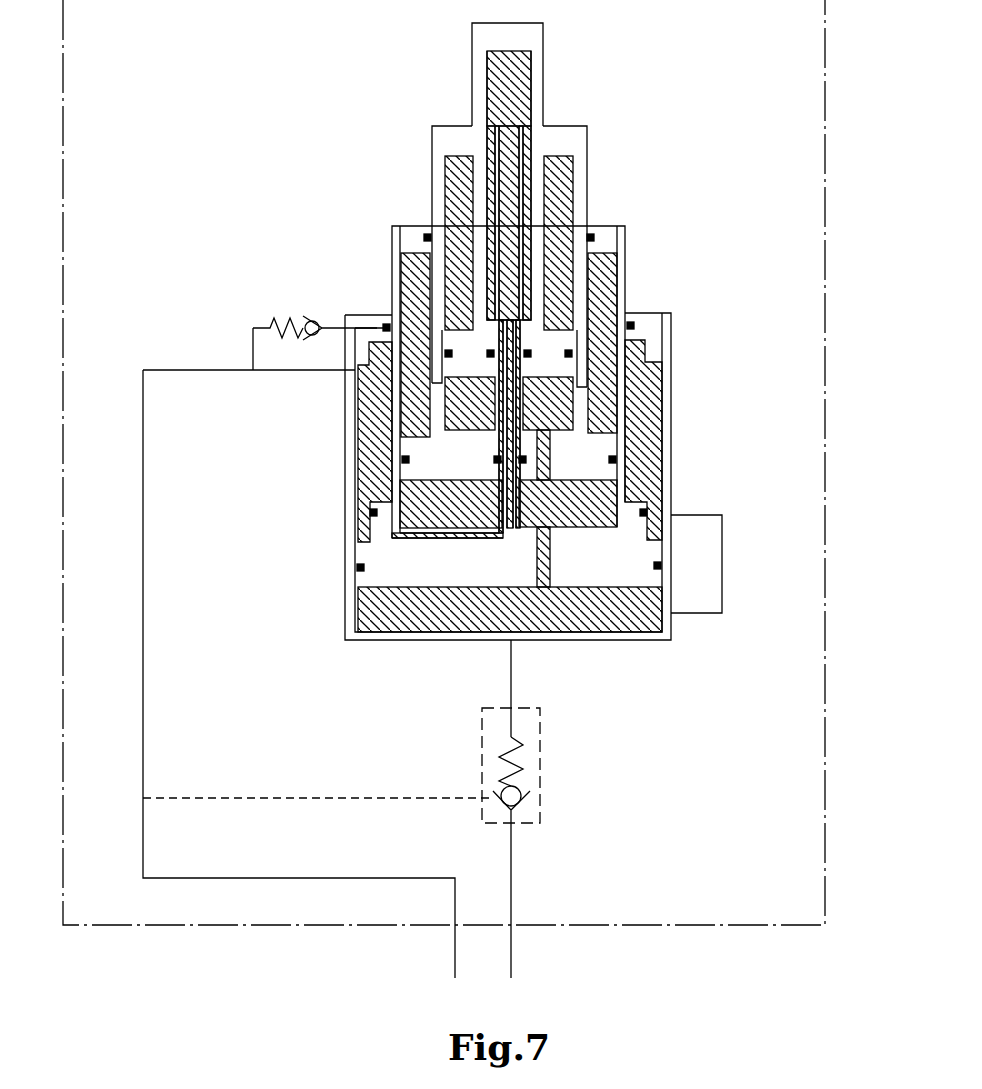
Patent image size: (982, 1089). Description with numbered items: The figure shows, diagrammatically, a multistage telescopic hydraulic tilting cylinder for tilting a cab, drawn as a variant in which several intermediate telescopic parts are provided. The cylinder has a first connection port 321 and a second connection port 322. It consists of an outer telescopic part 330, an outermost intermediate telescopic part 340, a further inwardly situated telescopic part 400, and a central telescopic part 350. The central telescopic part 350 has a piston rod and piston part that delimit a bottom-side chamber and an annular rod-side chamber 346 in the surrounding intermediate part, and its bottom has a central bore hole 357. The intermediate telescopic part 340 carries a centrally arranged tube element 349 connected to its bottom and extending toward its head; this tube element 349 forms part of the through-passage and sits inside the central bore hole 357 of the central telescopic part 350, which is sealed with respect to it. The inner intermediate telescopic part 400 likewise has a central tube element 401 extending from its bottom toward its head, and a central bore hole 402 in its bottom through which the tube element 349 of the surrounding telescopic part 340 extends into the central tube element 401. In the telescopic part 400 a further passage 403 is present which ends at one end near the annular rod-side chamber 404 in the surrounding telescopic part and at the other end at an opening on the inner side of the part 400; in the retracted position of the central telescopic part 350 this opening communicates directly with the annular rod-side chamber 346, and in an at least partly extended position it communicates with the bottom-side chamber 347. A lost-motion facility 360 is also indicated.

The first connection port 321 is at (511, 640).
The second connection port 322 is at (347, 370).
The outer telescopic part 330 is at (690, 322).
The intermediate telescopic part 340 is at (645, 234).
The annular rod-side chamber 346 is at (460, 185).
The bottom-side chamber 347 is at (540, 410).
The centrally arranged tube element 349 is at (520, 502).
The central telescopic part 350 is at (566, 42).
The central bore hole 357 is at (525, 343).
The lost-motion facility 360 is at (690, 613).
The further inwardly situated telescopic part 400 is at (604, 143).
The central tube element 401 is at (522, 138).
The central bore hole 402 is at (520, 441).
The further passage 403 is at (445, 392).
The annular rod-side chamber 404 is at (418, 280).